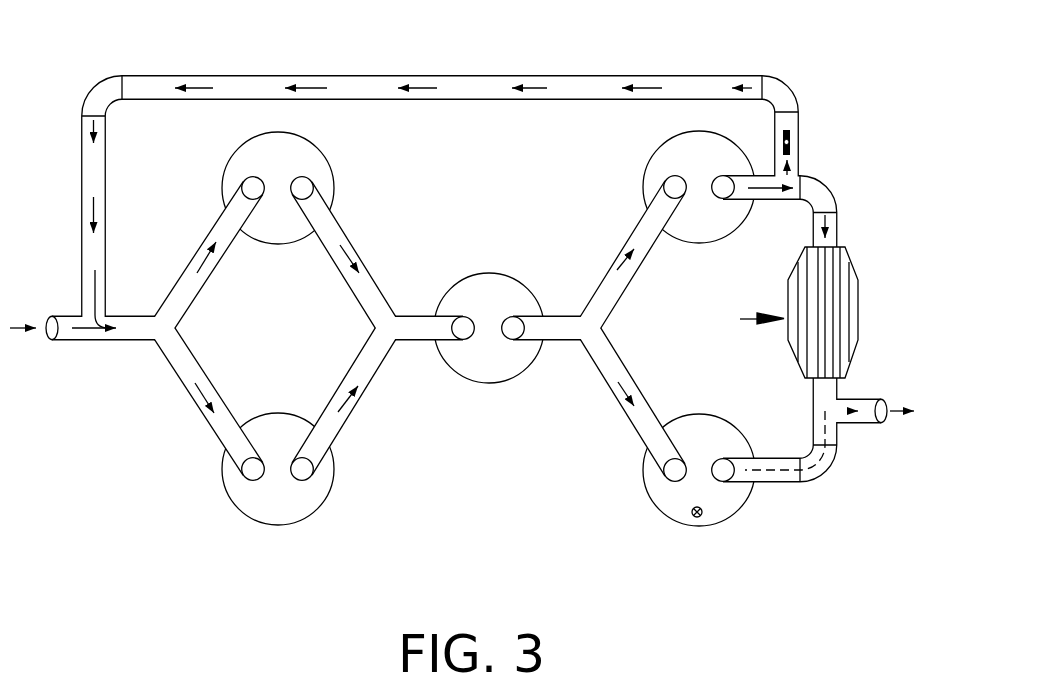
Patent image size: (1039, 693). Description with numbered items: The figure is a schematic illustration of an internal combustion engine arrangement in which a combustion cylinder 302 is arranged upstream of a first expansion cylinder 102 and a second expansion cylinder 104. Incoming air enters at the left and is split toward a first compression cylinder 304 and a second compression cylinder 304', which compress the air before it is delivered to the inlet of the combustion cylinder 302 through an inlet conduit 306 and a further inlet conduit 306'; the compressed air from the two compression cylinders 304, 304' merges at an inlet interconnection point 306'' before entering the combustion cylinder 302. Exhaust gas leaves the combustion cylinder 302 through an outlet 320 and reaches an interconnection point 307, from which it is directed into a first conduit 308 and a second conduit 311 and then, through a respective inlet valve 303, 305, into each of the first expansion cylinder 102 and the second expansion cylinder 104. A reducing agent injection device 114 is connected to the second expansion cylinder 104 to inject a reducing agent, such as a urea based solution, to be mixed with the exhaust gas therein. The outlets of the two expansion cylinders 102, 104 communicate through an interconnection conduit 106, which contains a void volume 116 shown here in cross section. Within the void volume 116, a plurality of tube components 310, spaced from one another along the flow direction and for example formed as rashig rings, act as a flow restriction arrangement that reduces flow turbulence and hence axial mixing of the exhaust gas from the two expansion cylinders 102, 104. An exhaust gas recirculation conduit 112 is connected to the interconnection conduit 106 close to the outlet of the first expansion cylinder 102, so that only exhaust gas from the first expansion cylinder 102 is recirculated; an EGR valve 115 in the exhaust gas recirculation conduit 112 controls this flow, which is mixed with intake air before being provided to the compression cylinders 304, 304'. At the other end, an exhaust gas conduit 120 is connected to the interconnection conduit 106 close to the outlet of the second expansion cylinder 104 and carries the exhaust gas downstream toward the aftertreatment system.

The first expansion cylinder 102 is at (699, 244).
The second expansion cylinder 104 is at (737, 510).
The interconnection conduit 106 is at (858, 301).
The exhaust gas recirculation (EGR) conduit 112 is at (475, 75).
The reducing agent injection device 114 is at (705, 517).
The EGR valve 115 is at (790, 143).
The void volume 116 is at (740, 319).
The exhaust gas conduit 120 is at (858, 424).
The combustion cylinder 302 is at (460, 383).
The inlet valve 303 is at (675, 187).
The first compression cylinder 304 is at (244, 184).
The second compression cylinder 304' is at (274, 495).
The inlet valve 305 is at (675, 470).
The inlet conduit 306 is at (327, 258).
The inlet conduit 306' is at (252, 398).
The inlet interconnection point 306'' is at (365, 327).
The interconnection point 307 is at (580, 331).
The first conduit 308 is at (627, 240).
The tube components 310 is at (823, 288).
The second conduit 311 is at (622, 417).
The outlet of the combustion cylinder 320 is at (513, 328).